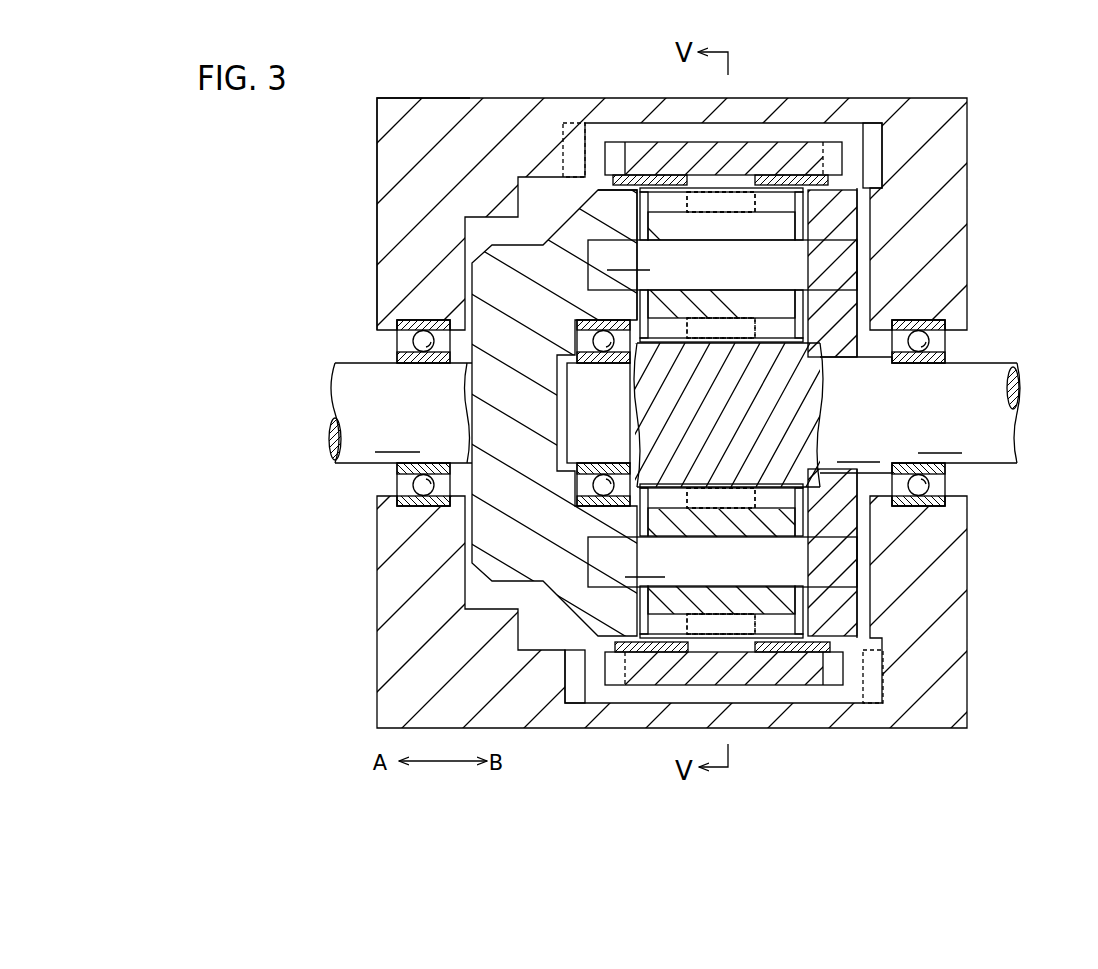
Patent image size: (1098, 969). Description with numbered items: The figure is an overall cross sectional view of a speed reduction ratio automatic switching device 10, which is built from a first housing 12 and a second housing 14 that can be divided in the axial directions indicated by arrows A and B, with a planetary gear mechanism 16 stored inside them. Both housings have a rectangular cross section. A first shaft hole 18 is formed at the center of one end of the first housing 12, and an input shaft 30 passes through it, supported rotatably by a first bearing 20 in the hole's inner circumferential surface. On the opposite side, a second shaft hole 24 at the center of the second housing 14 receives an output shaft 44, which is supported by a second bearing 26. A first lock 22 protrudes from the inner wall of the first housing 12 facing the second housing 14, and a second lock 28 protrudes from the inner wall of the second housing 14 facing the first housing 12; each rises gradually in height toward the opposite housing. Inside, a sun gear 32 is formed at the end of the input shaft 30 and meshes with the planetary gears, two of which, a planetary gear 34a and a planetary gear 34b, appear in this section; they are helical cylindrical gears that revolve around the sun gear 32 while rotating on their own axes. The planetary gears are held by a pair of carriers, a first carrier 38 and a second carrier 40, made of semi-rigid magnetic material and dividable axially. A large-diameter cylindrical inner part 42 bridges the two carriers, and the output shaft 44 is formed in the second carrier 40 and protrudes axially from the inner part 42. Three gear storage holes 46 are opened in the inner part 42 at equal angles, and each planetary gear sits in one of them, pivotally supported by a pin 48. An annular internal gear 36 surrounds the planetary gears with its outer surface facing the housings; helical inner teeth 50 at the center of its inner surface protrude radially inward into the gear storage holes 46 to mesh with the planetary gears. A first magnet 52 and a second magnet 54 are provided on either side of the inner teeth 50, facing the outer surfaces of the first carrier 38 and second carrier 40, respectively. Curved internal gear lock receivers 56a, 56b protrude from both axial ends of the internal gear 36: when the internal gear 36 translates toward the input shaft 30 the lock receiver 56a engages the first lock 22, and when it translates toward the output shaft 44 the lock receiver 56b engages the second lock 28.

The speed reduction ratio automatic switching device 10 is at (185, 150).
The first housing 12 is at (926, 96).
The second housing 14 is at (375, 160).
The planetary gear mechanism 16 is at (757, 139).
The first shaft hole 18 is at (958, 495).
The first bearing 20 is at (905, 324).
The first lock 22 is at (872, 150).
The second shaft hole 24 is at (387, 493).
The second bearing 26 is at (402, 322).
The second lock 28 is at (565, 680).
The input shaft 30 is at (997, 423).
The sun gear 32 is at (805, 496).
The planetary gear 34a is at (748, 226).
The planetary gear 34b is at (688, 605).
The internal gear 36 is at (743, 690).
The first carrier 38 is at (859, 203).
The second carrier 40 is at (566, 219).
The inner part 42 is at (610, 195).
The output shaft 44 is at (345, 378).
The gear storage hole 46 is at (640, 310).
The pin 48 is at (845, 268).
The inner teeth 50 is at (697, 226).
The first magnet 52 is at (800, 655).
The second magnet 54 is at (652, 652).
The internal gear lock receiver 56a is at (823, 142).
The internal gear lock receiver 56b is at (625, 686).